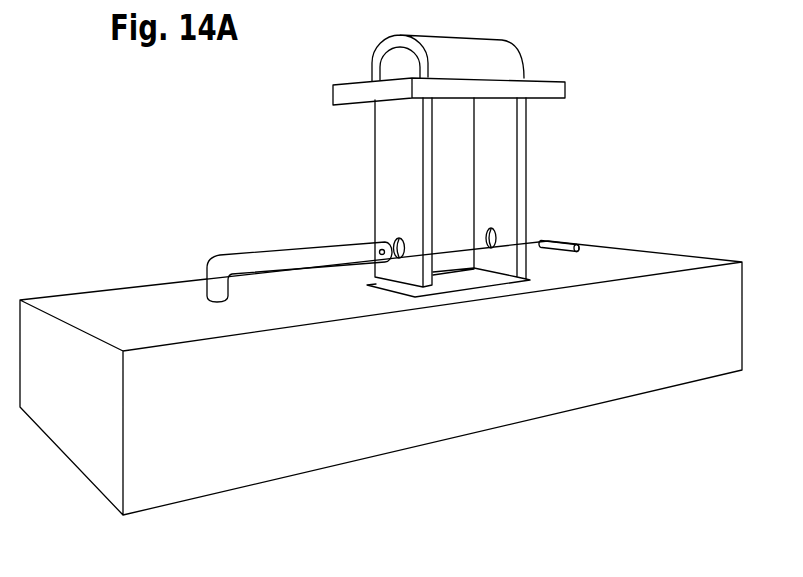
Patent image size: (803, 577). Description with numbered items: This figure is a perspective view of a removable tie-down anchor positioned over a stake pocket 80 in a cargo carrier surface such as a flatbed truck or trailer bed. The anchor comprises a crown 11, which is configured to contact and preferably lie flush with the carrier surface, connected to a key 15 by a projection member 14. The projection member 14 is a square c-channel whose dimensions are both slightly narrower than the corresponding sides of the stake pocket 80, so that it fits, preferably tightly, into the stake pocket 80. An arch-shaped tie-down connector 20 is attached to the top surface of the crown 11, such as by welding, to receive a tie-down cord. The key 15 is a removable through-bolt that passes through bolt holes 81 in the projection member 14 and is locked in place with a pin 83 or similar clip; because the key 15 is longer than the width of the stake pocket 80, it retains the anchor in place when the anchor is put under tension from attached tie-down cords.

The crown 11 is at (567, 88).
The projection member 14 is at (373, 157).
The key 15 is at (310, 246).
The tie-down connector 20 is at (517, 53).
The stake pocket 80 is at (388, 297).
The bolt holes 81 is at (495, 226).
The pin 83 is at (567, 240).